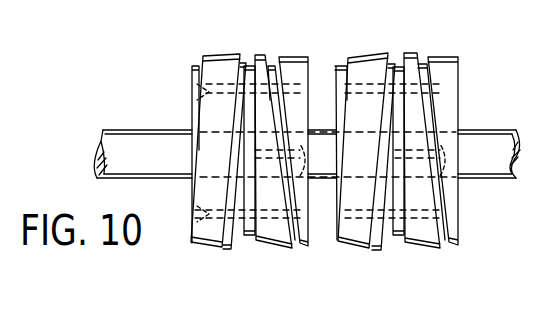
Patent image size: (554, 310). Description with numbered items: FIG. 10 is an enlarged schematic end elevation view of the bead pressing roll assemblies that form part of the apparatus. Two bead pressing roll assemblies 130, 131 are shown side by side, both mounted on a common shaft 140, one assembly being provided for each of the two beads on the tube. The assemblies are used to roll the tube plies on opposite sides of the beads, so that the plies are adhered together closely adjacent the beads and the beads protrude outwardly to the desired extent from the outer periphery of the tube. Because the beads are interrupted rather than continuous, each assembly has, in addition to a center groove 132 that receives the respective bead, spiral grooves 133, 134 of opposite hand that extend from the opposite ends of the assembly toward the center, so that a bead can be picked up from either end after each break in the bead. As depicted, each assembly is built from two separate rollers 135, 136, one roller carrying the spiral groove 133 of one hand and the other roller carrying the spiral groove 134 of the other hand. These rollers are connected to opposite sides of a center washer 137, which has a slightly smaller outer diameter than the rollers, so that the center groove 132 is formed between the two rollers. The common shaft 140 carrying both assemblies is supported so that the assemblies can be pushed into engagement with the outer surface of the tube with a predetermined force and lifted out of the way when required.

The bead pressing roll assembly 130 is at (216, 53).
The bead pressing roll assembly 131 is at (463, 70).
The center groove 132 is at (243, 62).
The spiral groove 133 is at (192, 68).
The spiral groove 134 is at (282, 84).
The roller 135 is at (198, 190).
The roller 136 is at (283, 243).
The center washer 137 is at (251, 237).
The common shaft 140 is at (488, 137).